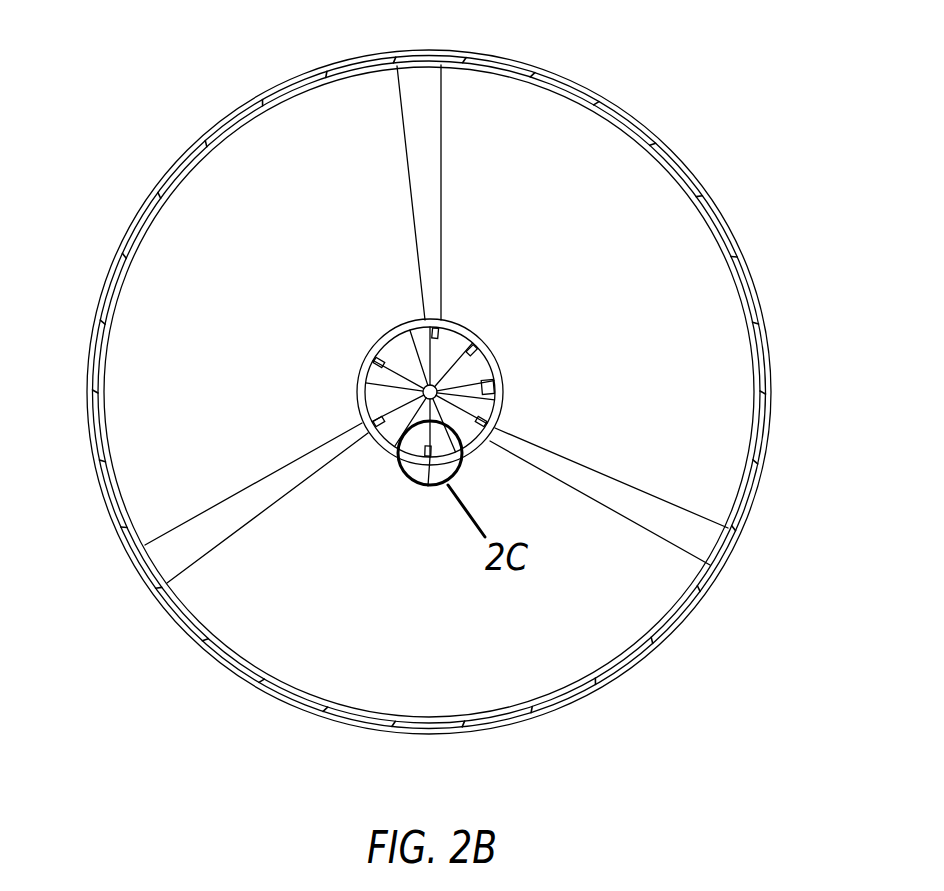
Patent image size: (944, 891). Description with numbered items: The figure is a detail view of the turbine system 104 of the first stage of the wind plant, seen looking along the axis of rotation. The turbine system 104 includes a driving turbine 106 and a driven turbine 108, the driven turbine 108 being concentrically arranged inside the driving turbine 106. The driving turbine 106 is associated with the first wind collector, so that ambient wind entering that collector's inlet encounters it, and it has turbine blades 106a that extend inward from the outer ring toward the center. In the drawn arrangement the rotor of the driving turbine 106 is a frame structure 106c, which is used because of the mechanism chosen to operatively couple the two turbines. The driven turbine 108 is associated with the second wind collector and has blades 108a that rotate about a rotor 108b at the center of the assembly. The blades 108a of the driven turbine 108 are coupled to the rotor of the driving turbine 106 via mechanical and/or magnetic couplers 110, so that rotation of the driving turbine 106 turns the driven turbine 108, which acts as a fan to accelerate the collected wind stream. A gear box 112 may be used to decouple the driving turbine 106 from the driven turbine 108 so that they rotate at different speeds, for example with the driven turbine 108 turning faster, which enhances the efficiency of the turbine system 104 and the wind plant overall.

The turbine system 104 is at (177, 100).
The driving turbine 106 is at (370, 143).
The turbine blades 106a is at (433, 147).
The rotor frame structure 106c is at (713, 200).
The driven turbine 108 is at (377, 322).
The blades 108a is at (375, 437).
The rotor 108b is at (358, 395).
The mechanical and/or magnetic couplers 110 is at (425, 487).
The gear box 112 is at (503, 383).